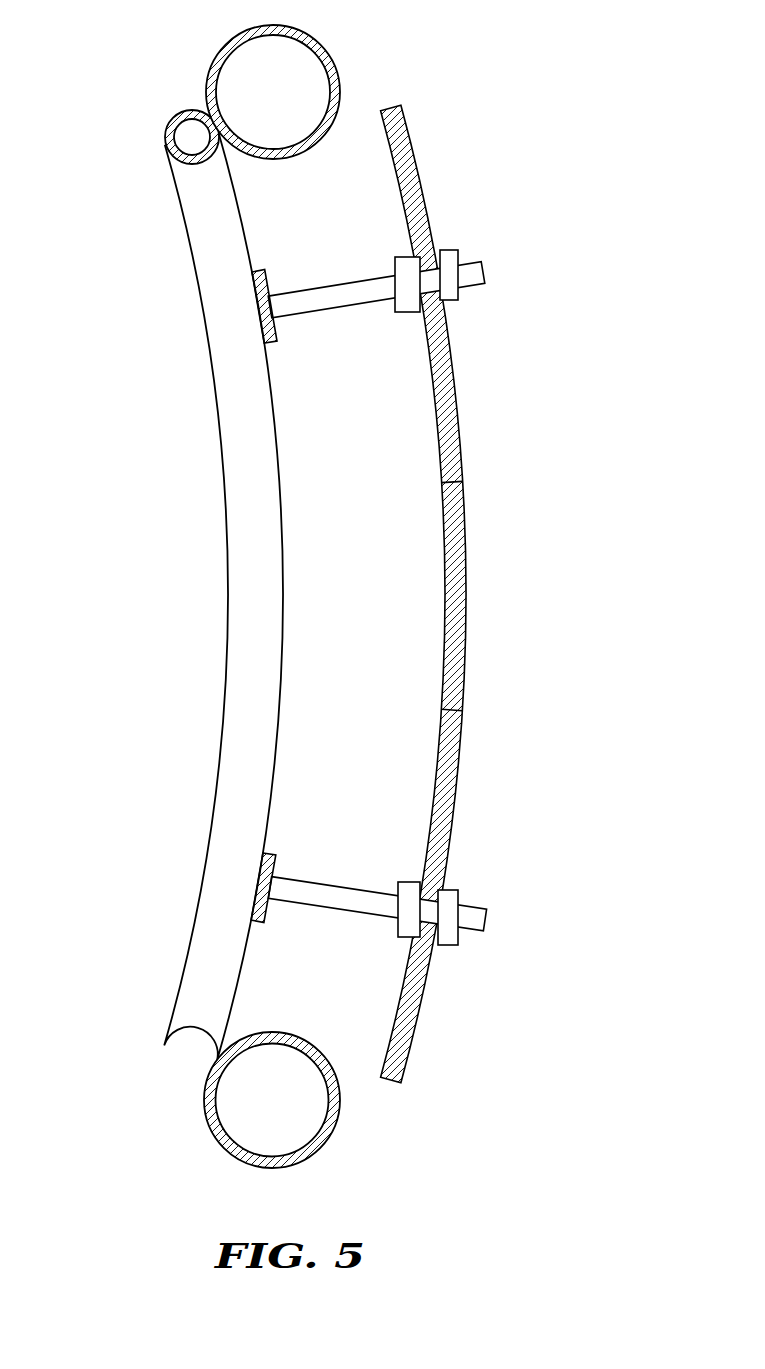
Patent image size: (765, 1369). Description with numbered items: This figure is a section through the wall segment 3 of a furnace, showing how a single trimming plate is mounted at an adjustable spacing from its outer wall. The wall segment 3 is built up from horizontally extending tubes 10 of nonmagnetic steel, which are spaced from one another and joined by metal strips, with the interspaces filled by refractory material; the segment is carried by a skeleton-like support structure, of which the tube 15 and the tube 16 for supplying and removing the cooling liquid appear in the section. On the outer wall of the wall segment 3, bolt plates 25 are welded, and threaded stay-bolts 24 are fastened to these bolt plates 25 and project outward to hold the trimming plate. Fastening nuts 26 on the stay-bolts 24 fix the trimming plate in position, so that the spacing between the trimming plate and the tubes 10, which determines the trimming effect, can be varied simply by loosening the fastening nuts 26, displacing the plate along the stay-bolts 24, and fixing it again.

The wall segment 3 is at (322, 596).
The tubes 10 is at (225, 460).
The tube 15 is at (337, 1123).
The tube 16 is at (335, 80).
The threaded stay-bolts 24 is at (485, 270).
The bolt plates 25 is at (275, 337).
The fastening nuts 26 is at (397, 259).